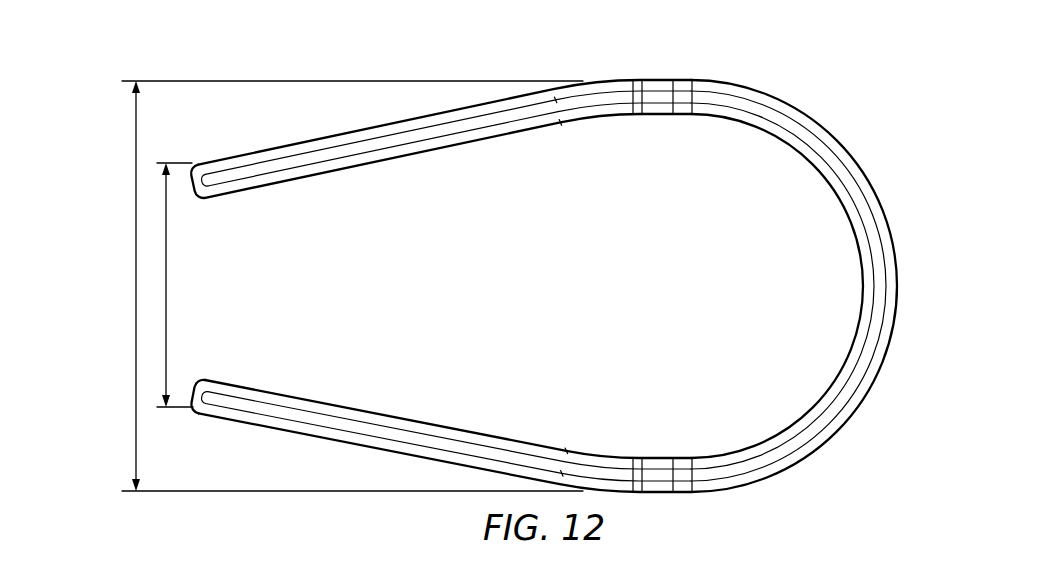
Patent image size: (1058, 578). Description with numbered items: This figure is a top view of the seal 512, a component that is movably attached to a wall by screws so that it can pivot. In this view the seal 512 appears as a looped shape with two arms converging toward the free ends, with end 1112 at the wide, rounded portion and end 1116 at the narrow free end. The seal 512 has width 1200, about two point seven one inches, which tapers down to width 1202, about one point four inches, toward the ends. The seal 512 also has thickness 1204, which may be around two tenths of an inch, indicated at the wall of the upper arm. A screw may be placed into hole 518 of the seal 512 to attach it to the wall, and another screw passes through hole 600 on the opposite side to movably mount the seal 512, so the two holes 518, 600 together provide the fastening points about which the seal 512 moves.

The seal 512 is at (547, 286).
The hole 600 is at (648, 98).
The hole 518 is at (646, 474).
The end 1112 is at (890, 234).
The end 1116 is at (194, 390).
The thickness 1204 is at (243, 218).
The width 1200 is at (136, 287).
The width 1202 is at (166, 285).